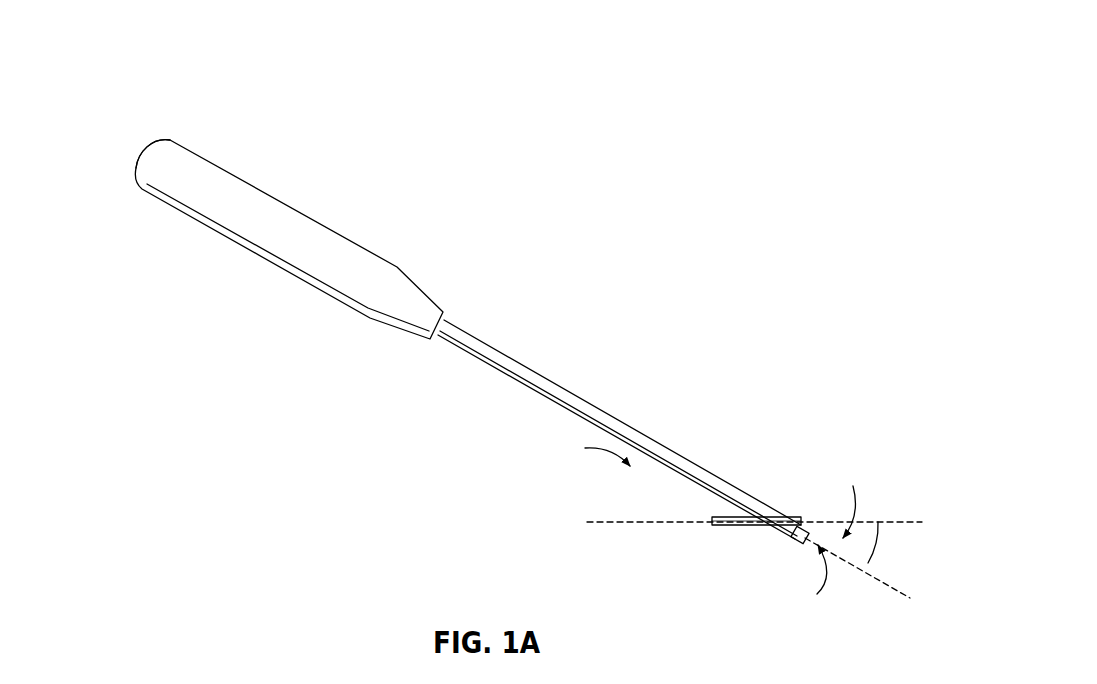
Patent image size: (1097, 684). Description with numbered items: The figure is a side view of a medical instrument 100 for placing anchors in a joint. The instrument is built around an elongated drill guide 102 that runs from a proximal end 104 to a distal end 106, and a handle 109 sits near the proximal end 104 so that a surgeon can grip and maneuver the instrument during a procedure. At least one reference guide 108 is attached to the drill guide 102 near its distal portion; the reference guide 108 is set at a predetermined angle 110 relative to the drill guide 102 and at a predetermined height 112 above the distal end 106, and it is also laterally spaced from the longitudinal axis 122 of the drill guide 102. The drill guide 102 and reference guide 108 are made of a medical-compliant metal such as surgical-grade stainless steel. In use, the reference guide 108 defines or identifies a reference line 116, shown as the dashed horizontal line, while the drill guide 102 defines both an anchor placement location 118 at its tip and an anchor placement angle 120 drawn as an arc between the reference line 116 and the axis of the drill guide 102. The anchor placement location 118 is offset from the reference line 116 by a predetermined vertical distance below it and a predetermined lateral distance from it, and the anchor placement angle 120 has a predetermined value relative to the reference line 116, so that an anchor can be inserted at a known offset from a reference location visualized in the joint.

The medical instrument 100 is at (137, 128).
The drill guide 102 is at (561, 387).
The proximal end 104 is at (163, 138).
The distal end 106 is at (805, 543).
The reference guide 108 is at (757, 528).
The handle 109 is at (299, 210).
The predetermined angle 110 is at (582, 450).
The predetermined height 112 is at (856, 498).
The reference line 116 is at (918, 522).
The anchor placement location 118 is at (798, 577).
The anchor placement angle 120 is at (879, 552).
The longitudinal axis 122 is at (902, 597).